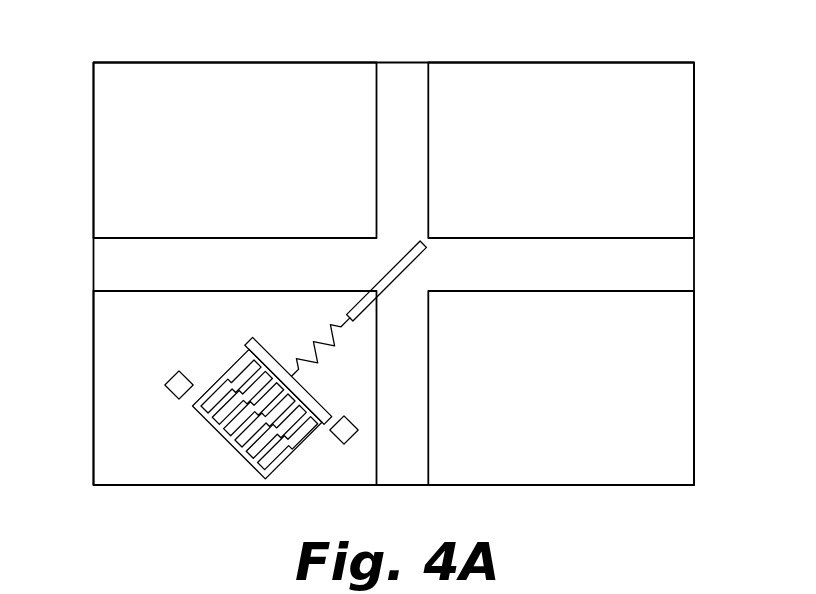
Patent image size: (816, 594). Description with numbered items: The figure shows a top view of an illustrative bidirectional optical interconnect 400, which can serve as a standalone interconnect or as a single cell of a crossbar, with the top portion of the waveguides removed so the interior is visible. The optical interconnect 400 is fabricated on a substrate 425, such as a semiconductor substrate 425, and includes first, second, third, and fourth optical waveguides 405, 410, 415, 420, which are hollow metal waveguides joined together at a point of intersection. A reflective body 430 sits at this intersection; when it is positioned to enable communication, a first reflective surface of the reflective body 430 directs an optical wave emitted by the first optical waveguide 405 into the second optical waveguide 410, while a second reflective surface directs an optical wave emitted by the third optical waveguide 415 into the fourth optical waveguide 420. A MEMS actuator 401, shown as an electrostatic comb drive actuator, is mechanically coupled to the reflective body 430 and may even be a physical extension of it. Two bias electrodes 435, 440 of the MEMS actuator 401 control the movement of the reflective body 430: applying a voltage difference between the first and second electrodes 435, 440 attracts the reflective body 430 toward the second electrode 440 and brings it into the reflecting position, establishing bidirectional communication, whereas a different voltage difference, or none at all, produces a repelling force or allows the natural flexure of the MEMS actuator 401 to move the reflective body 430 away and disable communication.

The bidirectional optical interconnect 400 is at (336, 195).
The MEMS actuator 401 is at (213, 365).
The first optical waveguide 405 is at (197, 238).
The second optical waveguide 410 is at (376, 107).
The third optical waveguide 415 is at (429, 380).
The fourth optical waveguide 420 is at (622, 238).
The substrate 425 is at (636, 62).
The reflective body 430 is at (430, 238).
The first bias electrode 435 is at (166, 383).
The second bias electrode 440 is at (343, 445).